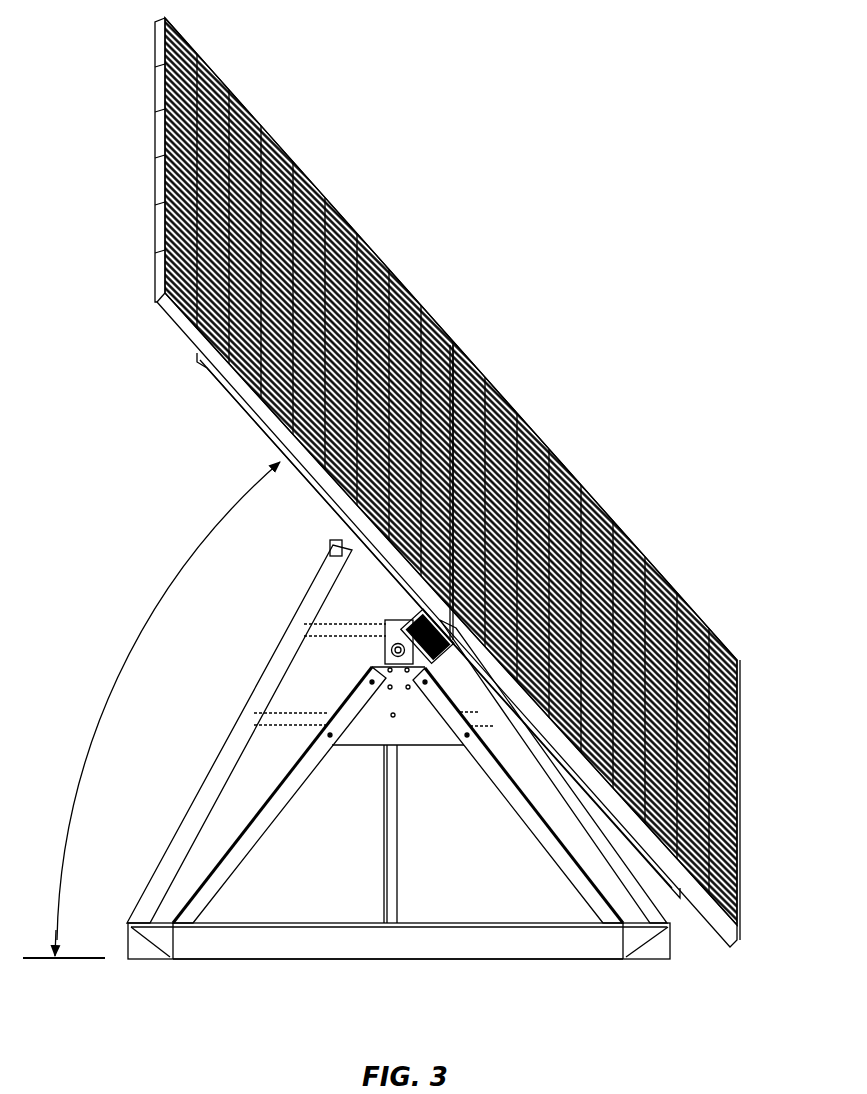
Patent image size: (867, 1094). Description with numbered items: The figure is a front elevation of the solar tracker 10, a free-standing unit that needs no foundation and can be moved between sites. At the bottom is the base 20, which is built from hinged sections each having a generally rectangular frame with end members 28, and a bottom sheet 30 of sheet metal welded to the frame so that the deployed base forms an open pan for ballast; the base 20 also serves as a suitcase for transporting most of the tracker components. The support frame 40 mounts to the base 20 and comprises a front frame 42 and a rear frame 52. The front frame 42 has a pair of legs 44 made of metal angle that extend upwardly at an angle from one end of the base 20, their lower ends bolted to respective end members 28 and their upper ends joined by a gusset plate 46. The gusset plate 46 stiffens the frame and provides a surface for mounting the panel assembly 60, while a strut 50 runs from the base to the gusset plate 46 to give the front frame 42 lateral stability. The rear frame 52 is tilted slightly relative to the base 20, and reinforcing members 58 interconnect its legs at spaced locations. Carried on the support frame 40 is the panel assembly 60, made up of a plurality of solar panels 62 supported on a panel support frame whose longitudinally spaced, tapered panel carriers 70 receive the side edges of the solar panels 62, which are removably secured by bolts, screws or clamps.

The solar tracker 10 is at (522, 123).
The base 20 is at (225, 978).
The end members 28 is at (305, 940).
The bottom sheet 30 is at (458, 955).
The support frame 40 is at (222, 722).
The front frame 42 is at (232, 830).
The legs 44 is at (283, 795).
The gusset plate 46 is at (418, 735).
The strut 50 is at (302, 590).
The rear frame 52 is at (272, 660).
The reinforcing members 58 is at (300, 720).
The panel assembly 60 is at (560, 407).
The solar panels 62 is at (182, 52).
The panel carriers 70 is at (298, 495).